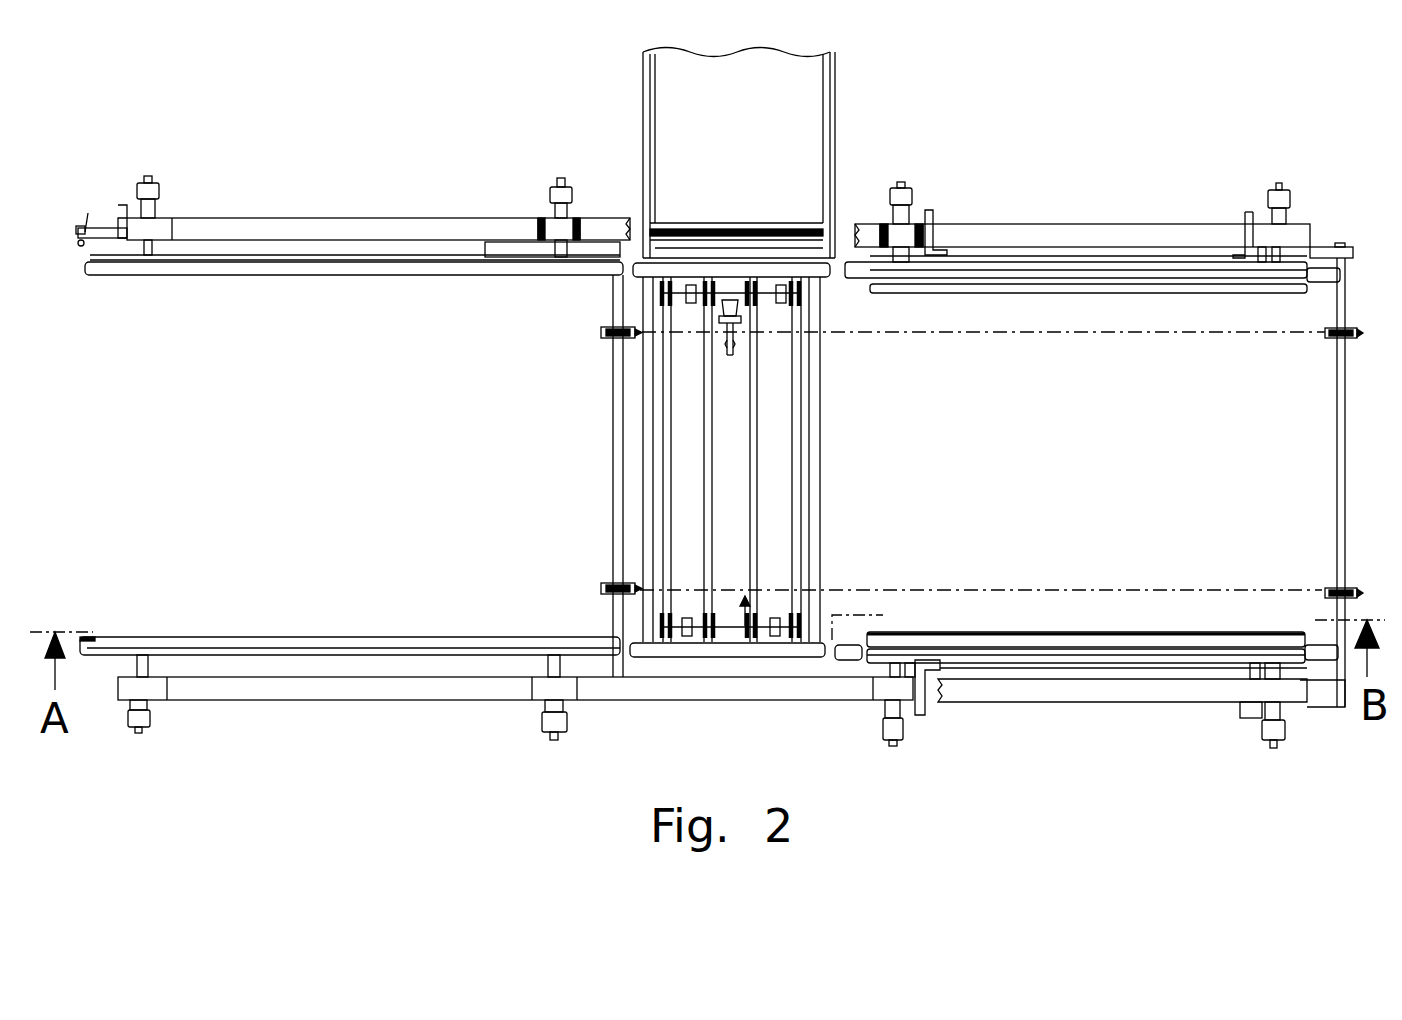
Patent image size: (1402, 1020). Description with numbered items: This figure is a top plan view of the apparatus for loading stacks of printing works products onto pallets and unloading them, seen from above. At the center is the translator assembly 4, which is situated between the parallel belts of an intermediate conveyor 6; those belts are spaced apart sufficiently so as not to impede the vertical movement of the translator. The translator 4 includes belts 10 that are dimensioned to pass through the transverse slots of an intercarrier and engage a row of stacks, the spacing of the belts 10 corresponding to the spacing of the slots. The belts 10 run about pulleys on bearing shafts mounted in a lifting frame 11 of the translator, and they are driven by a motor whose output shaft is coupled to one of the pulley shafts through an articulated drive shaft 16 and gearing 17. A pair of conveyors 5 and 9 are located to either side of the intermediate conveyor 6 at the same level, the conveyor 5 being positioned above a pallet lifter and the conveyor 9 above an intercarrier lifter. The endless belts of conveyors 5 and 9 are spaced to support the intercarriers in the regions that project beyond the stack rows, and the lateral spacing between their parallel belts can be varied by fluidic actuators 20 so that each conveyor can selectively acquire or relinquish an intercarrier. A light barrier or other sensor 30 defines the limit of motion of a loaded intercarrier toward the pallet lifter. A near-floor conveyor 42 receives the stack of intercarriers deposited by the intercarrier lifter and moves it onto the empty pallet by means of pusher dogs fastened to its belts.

The translator assembly 4 is at (745, 652).
The conveyor 5 is at (320, 266).
The intermediate conveyor 6 is at (690, 660).
The conveyor 9 is at (1070, 645).
The belts 10 is at (667, 398).
The lifting frame 11 is at (699, 426).
The articulated drive shaft 16 is at (735, 349).
The gearing 17 is at (739, 307).
The fluidic actuators 20 is at (150, 192).
The sensor 30 is at (77, 246).
The near-floor conveyor 42 is at (1070, 336).